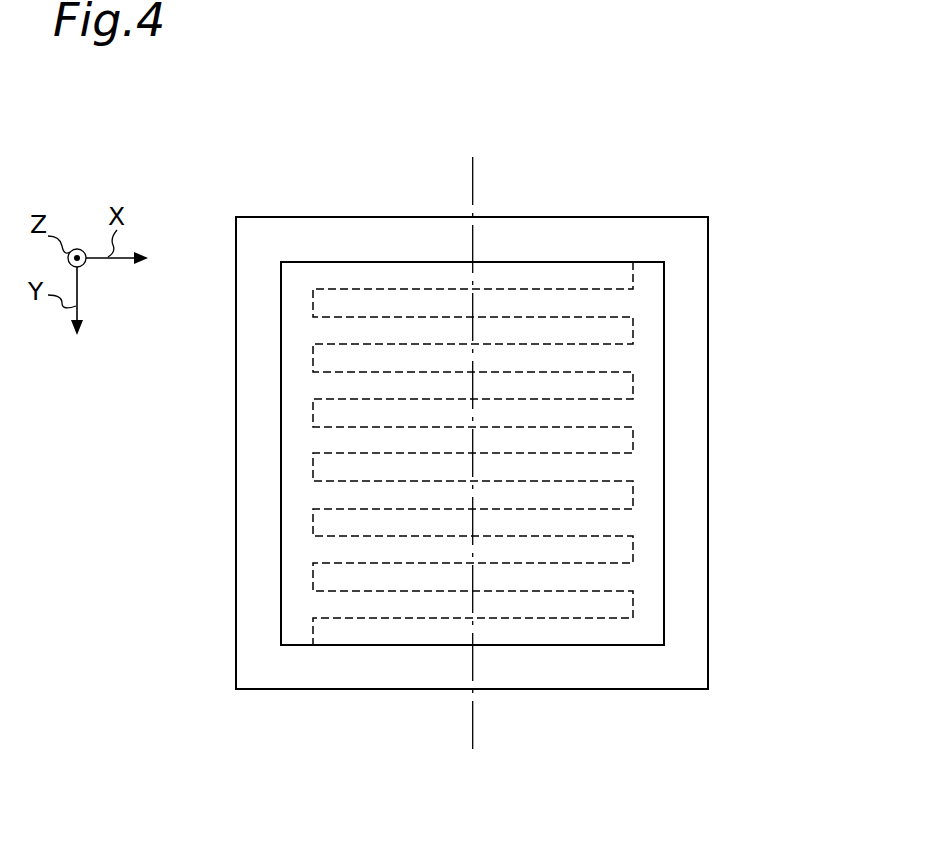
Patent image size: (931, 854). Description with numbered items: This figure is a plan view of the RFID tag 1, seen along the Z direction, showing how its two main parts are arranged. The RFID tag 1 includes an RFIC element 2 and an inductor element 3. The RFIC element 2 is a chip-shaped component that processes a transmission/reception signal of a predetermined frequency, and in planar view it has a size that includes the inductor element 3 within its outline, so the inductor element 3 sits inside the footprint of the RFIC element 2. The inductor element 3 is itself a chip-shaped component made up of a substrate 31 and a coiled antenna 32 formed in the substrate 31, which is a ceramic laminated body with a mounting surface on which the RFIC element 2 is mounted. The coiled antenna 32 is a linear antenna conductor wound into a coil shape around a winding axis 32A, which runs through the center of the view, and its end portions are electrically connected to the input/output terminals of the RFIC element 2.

The RFID tag 1 is at (217, 158).
The RFIC element 2 is at (693, 243).
The inductor element 3 is at (563, 453).
The substrate 31 is at (650, 414).
The coiled antenna 32 is at (633, 385).
The winding axis 32A is at (473, 173).